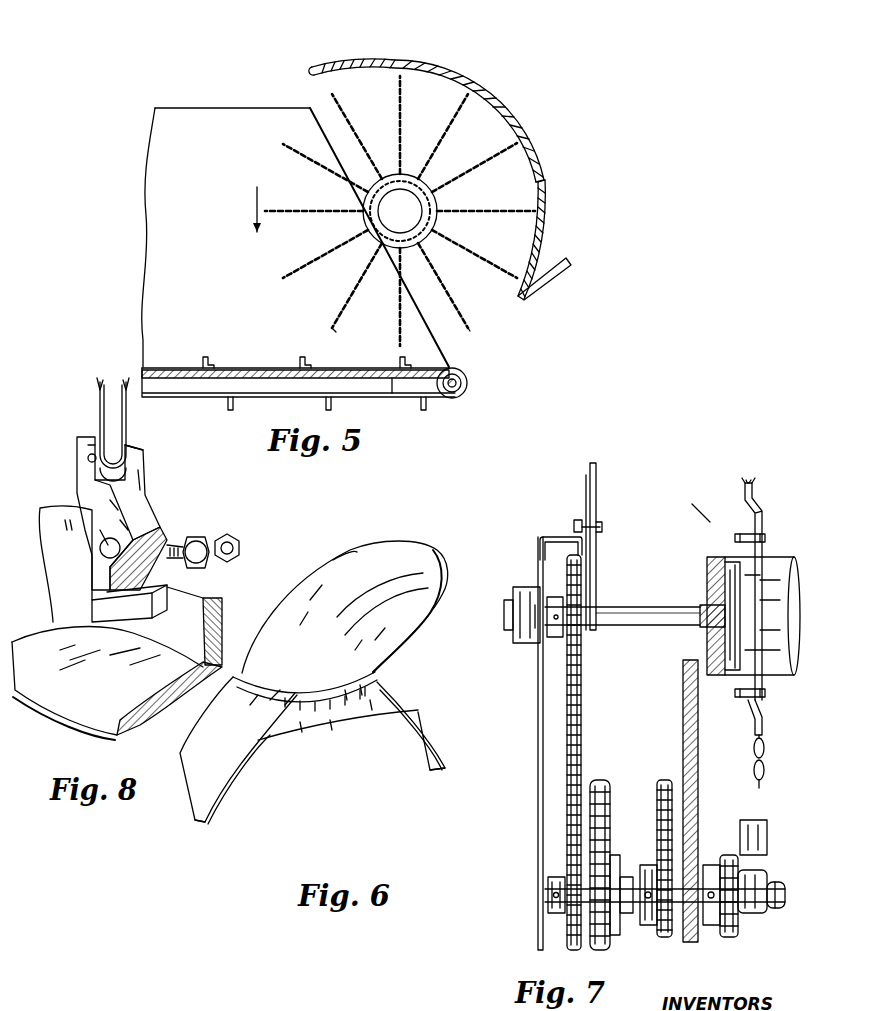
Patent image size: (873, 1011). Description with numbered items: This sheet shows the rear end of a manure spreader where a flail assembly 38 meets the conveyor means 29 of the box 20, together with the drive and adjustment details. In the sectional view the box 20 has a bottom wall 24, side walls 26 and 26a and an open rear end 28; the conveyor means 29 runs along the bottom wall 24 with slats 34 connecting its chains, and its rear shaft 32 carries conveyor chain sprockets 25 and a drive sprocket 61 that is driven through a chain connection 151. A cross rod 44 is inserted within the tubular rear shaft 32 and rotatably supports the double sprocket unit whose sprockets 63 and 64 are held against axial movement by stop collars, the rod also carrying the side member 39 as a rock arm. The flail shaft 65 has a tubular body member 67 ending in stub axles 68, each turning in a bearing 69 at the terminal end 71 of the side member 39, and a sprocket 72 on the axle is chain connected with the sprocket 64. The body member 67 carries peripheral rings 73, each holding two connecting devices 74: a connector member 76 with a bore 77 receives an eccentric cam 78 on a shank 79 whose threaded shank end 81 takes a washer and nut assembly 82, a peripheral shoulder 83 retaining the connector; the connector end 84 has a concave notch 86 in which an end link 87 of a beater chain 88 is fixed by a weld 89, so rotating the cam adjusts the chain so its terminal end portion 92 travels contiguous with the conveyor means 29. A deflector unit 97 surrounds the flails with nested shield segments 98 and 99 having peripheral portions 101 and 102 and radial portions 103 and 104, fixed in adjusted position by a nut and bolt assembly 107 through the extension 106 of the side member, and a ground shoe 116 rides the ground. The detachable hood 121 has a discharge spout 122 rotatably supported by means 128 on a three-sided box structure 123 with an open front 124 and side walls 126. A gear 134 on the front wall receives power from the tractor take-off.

In FIG. 5, the box 20 is at (236, 100).
In FIG. 5, the bottom wall 24 is at (391, 378).
In FIG. 7, the conveyor chain sprockets 25 is at (720, 937).
In FIG. 5, the side wall 26 is at (150, 256).
In FIG. 7, the side wall 26a is at (698, 778).
In FIG. 5, the open rear end 28 is at (318, 135).
In FIG. 5, the conveyor means 29 is at (268, 360).
In FIG. 5, the rear shaft 32 is at (462, 395).
In FIG. 7, the rear shaft 32 is at (755, 915).
In FIG. 5, the slats 34 is at (205, 357).
In FIG. 5, the flail assembly 38 is at (478, 112).
In FIG. 7, the flail assembly 38 is at (652, 628).
In FIG. 7, the side member 39 is at (538, 805).
In FIG. 5, the cross rod 44 is at (452, 393).
In FIG. 7, the cross rod 44 is at (775, 910).
In FIG. 7, the drive sprocket 61 is at (650, 927).
In FIG. 7, the sprocket 63 is at (572, 950).
In FIG. 7, the sprocket 64 is at (600, 952).
In FIG. 5, the shaft 65 is at (408, 172).
In FIG. 7, the shaft 65 is at (724, 520).
In FIG. 8, the tubular body member 67 is at (92, 713).
In FIG. 7, the tubular body member 67 is at (710, 557).
In FIG. 7, the stub axle 68 is at (660, 606).
In FIG. 7, the bearing 69 is at (522, 595).
In FIG. 7, the terminal end 71 is at (540, 548).
In FIG. 7, the sprocket 72 is at (567, 565).
In FIG. 8, the peripheral ring 73 is at (222, 615).
In FIG. 7, the peripheral ring 73 is at (752, 690).
In FIG. 8, the connecting device 74 is at (150, 468).
In FIG. 7, the connecting device 74 is at (758, 505).
In FIG. 8, the connector member 76 is at (90, 557).
In FIG. 8, the bore 77 is at (160, 540).
In FIG. 8, the cam 78 is at (102, 578).
In FIG. 8, the shank 79 is at (198, 538).
In FIG. 8, the shank end 81 is at (200, 566).
In FIG. 8, the washer and nut assembly 82 is at (245, 540).
In FIG. 8, the peripheral shoulder 83 is at (100, 546).
In FIG. 8, the end 84 is at (135, 447).
In FIG. 8, the concave notch 86 is at (92, 447).
In FIG. 8, the end link 87 is at (92, 478).
In FIG. 5, the chain 88 is at (355, 292).
In FIG. 8, the chain 88 is at (97, 418).
In FIG. 7, the chain 88 is at (752, 771).
In FIG. 8, the weld 89 is at (88, 460).
In FIG. 5, the terminal end portion 92 is at (336, 326).
In FIG. 5, the deflector unit 97 is at (550, 142).
In FIG. 7, the deflector unit 97 is at (612, 470).
In FIG. 5, the shield segment 98 is at (441, 58).
In FIG. 5, the shield segment 99 is at (544, 258).
In FIG. 5, the peripheral portion 101 is at (520, 126).
In FIG. 5, the peripheral portion 102 is at (548, 222).
In FIG. 7, the radial portion 103 is at (586, 490).
In FIG. 7, the radial portion 104 is at (591, 466).
In FIG. 7, the extension 106 is at (560, 537).
In FIG. 7, the nut and bolt assembly 107 is at (575, 520).
In FIG. 5, the ground shoe 116 is at (570, 275).
In FIG. 6, the detachable hood 121 is at (392, 660).
In FIG. 6, the discharge spout 122 is at (390, 550).
In FIG. 6, the box structure 123 is at (420, 720).
In FIG. 6, the open front 124 is at (364, 785).
In FIG. 6, the side walls 126 is at (440, 742).
In FIG. 6, the rotatable support means 128 is at (377, 675).
In FIG. 7, the gear 134 is at (762, 835).
In FIG. 7, the chain connection 151 is at (660, 790).